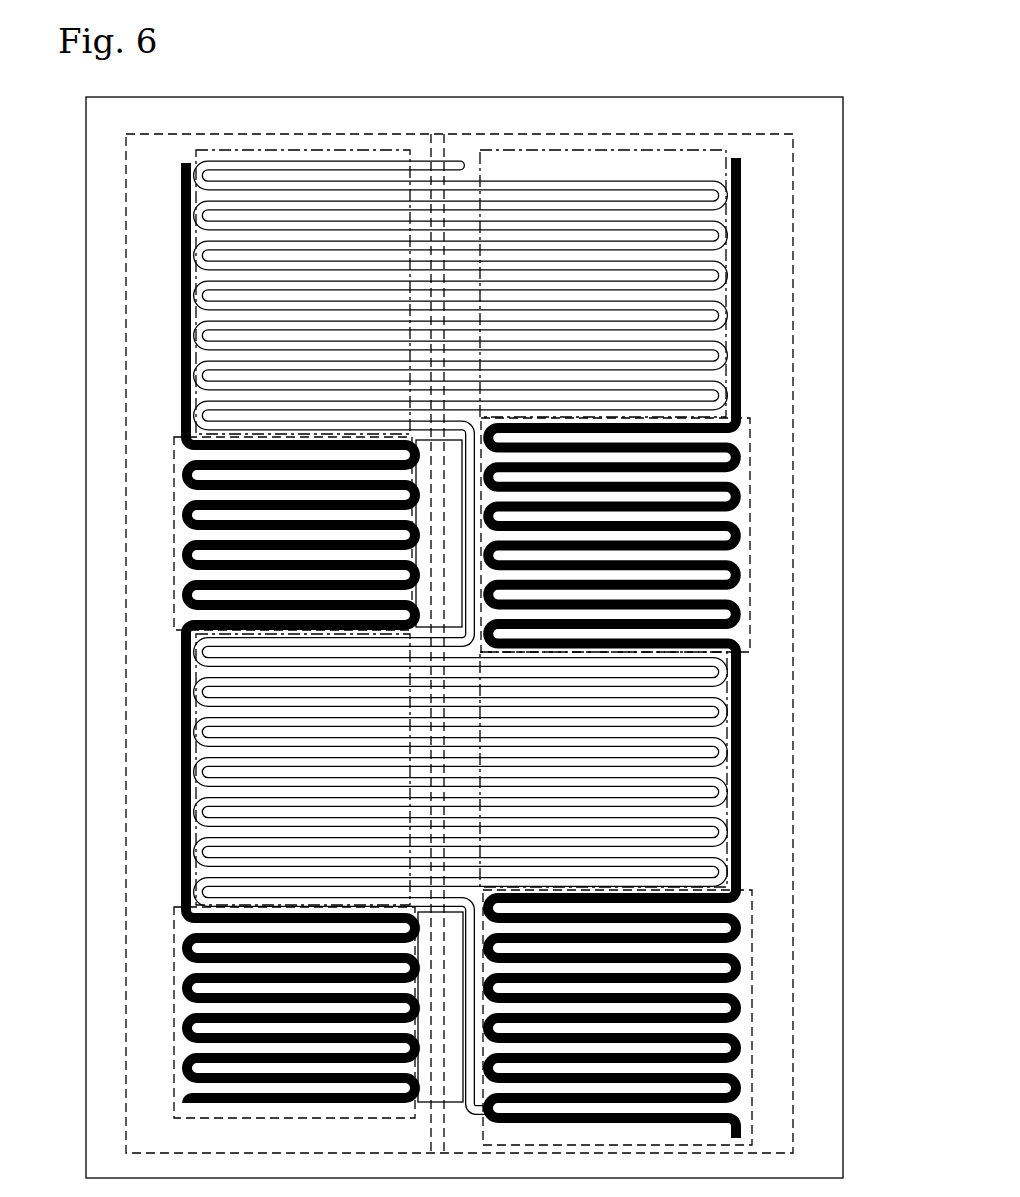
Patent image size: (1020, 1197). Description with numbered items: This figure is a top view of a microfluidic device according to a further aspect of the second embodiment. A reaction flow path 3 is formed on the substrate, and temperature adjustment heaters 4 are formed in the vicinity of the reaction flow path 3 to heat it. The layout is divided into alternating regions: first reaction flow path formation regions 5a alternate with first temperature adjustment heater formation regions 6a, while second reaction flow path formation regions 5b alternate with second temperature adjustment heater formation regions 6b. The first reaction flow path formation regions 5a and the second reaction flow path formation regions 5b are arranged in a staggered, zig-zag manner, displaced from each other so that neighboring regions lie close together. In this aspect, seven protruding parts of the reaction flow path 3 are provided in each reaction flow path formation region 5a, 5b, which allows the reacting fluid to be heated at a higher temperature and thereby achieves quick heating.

The reaction flow path 3 is at (306, 162).
The temperature adjustment heater 4 is at (743, 333).
The first reaction flow path formation region 5a is at (190, 213).
The second reaction flow path formation region 5b is at (733, 213).
The first temperature adjustment heater formation region 6a is at (174, 533).
The second temperature adjustment heater formation region 6b is at (750, 533).